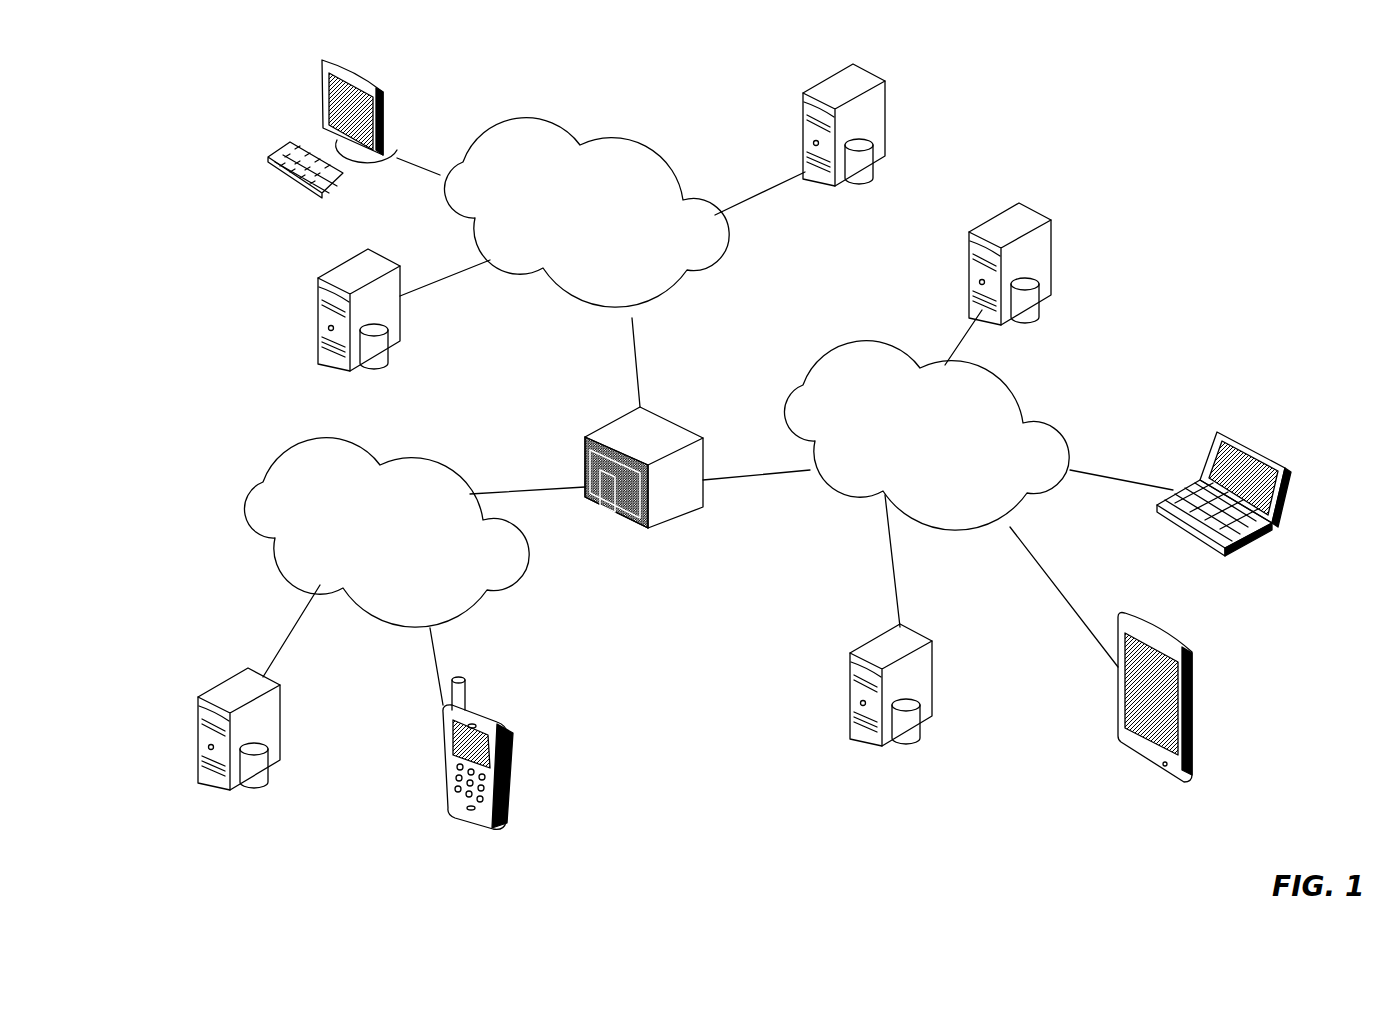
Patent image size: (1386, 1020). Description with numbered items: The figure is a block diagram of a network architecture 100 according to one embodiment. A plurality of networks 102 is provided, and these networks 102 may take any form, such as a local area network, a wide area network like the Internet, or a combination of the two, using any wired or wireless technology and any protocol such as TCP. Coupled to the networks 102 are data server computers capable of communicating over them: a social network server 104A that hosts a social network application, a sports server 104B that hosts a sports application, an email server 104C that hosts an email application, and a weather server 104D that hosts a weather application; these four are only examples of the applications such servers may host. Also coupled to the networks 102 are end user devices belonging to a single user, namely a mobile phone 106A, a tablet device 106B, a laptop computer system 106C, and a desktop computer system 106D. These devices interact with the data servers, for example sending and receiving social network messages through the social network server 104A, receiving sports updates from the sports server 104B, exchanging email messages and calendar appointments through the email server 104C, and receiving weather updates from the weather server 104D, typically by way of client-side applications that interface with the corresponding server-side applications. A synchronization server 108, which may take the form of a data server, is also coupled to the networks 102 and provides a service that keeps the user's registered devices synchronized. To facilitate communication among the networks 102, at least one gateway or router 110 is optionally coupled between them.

The network architecture 100 is at (1135, 135).
The networks 102 is at (623, 147).
The social network server 104A is at (318, 295).
The sports server 104B is at (850, 677).
The email server 104C is at (880, 103).
The weather server 104D is at (230, 678).
The mobile phone 106A is at (515, 747).
The tablet device 106B is at (1193, 700).
The laptop computer system 106C is at (1217, 432).
The desktop computer system 106D is at (383, 103).
The synchronization server 108 is at (1048, 245).
The gateway or router 110 is at (663, 418).